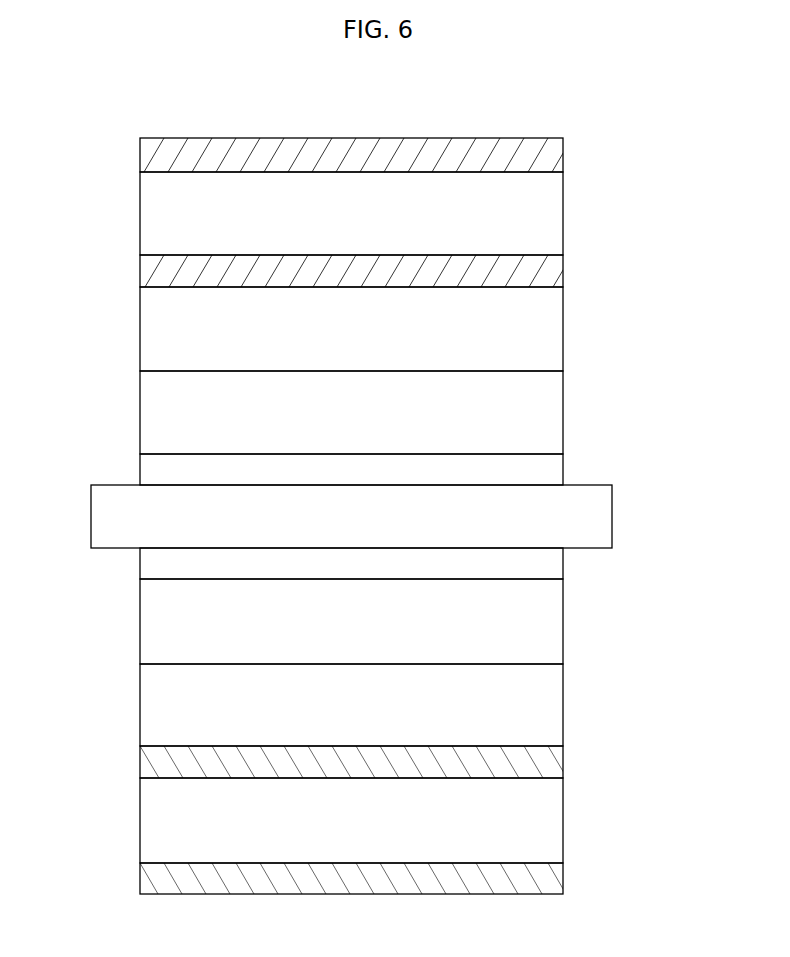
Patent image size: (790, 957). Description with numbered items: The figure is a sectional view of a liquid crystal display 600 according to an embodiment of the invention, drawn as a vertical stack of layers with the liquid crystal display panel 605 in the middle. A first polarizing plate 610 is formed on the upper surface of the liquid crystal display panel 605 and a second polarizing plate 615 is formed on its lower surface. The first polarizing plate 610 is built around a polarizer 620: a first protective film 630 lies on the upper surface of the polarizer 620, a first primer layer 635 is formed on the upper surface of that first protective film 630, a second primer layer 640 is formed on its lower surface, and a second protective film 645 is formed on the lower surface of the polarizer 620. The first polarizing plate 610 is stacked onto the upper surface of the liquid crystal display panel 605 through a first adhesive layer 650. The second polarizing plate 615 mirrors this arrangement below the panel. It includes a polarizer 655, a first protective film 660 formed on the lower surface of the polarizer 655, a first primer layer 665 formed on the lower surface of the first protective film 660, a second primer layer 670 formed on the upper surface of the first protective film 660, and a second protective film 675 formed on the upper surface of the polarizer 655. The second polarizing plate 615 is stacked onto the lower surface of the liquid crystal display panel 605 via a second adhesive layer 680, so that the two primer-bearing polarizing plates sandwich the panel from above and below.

The liquid crystal display 600 is at (649, 72).
The liquid crystal display panel 605 is at (602, 516).
The first polarizing plate 610 is at (352, 311).
The second polarizing plate 615 is at (352, 721).
The polarizer 620 is at (148, 335).
The first protective film 630 is at (148, 225).
The first primer layer 635 is at (140, 157).
The second primer layer 640 is at (140, 275).
The second protective film 645 is at (148, 420).
The first adhesive layer 650 is at (148, 471).
The polarizer 655 is at (148, 704).
The first protective film 660 is at (148, 812).
The first primer layer 665 is at (140, 882).
The second primer layer 670 is at (140, 765).
The second protective film 675 is at (148, 620).
The second adhesive layer 680 is at (148, 567).